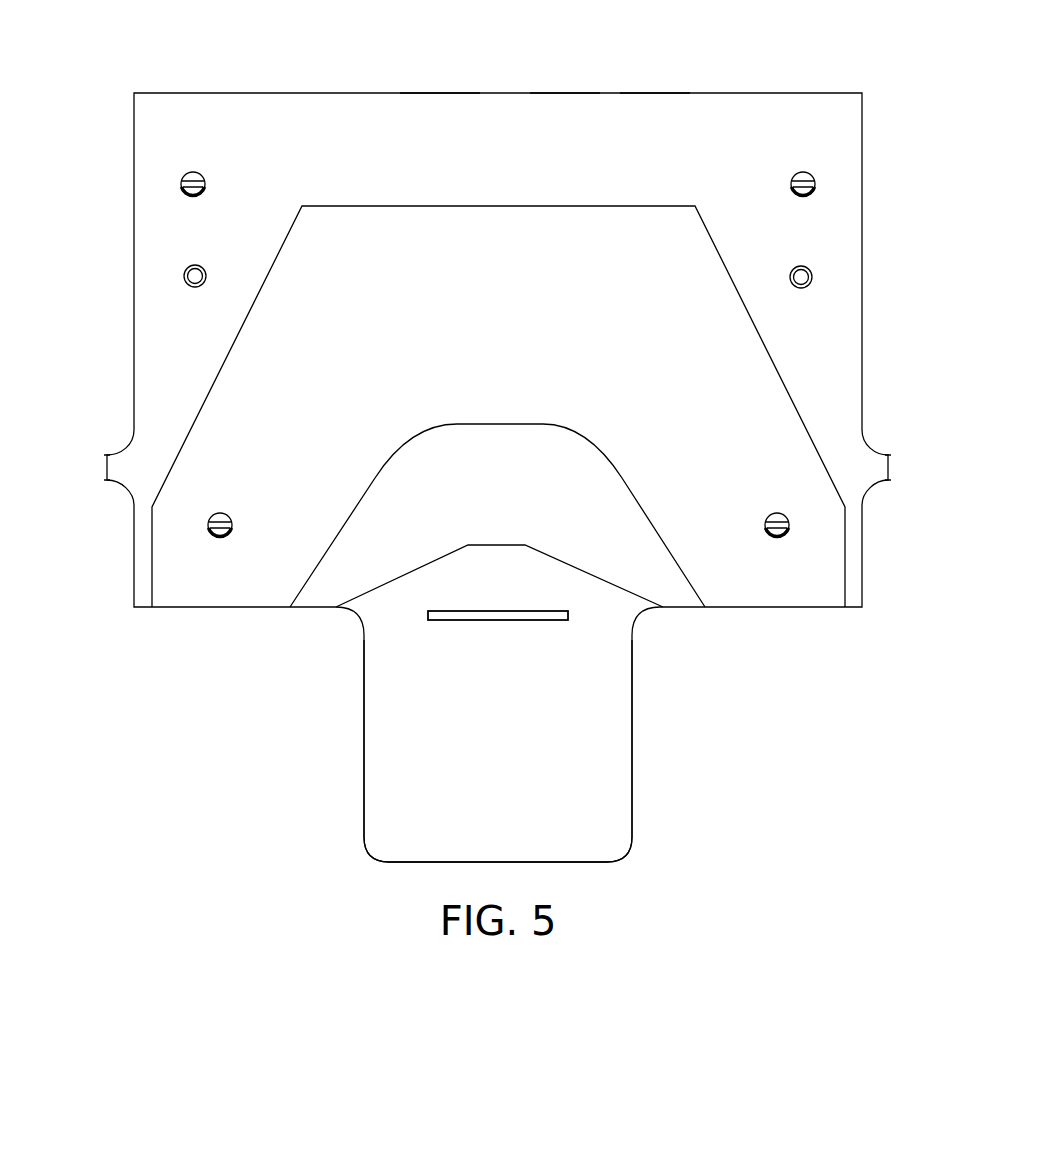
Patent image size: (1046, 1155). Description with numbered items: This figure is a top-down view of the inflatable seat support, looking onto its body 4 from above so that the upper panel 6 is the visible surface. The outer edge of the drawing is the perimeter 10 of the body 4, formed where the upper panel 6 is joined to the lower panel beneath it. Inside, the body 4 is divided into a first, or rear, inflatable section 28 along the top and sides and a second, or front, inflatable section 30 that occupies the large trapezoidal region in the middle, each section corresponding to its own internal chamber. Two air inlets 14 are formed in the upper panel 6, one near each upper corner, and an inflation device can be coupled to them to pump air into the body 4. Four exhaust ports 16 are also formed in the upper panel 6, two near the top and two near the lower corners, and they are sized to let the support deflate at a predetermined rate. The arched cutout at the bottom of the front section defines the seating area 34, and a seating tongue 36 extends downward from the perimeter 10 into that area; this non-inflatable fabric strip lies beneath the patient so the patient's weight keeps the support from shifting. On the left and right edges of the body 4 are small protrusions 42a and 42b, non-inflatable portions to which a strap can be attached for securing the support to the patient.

The body 4 is at (562, 108).
The upper panel 6 is at (656, 108).
The perimeter 10 is at (766, 34).
The air inlet 14 is at (190, 283).
The exhaust port 16 is at (190, 176).
The first inflatable section 28 is at (450, 125).
The second inflatable section 30 is at (700, 522).
The seating area 34 is at (452, 574).
The seating tongue 36 is at (587, 785).
The protrusion 42a is at (107, 467).
The protrusion 42b is at (888, 467).